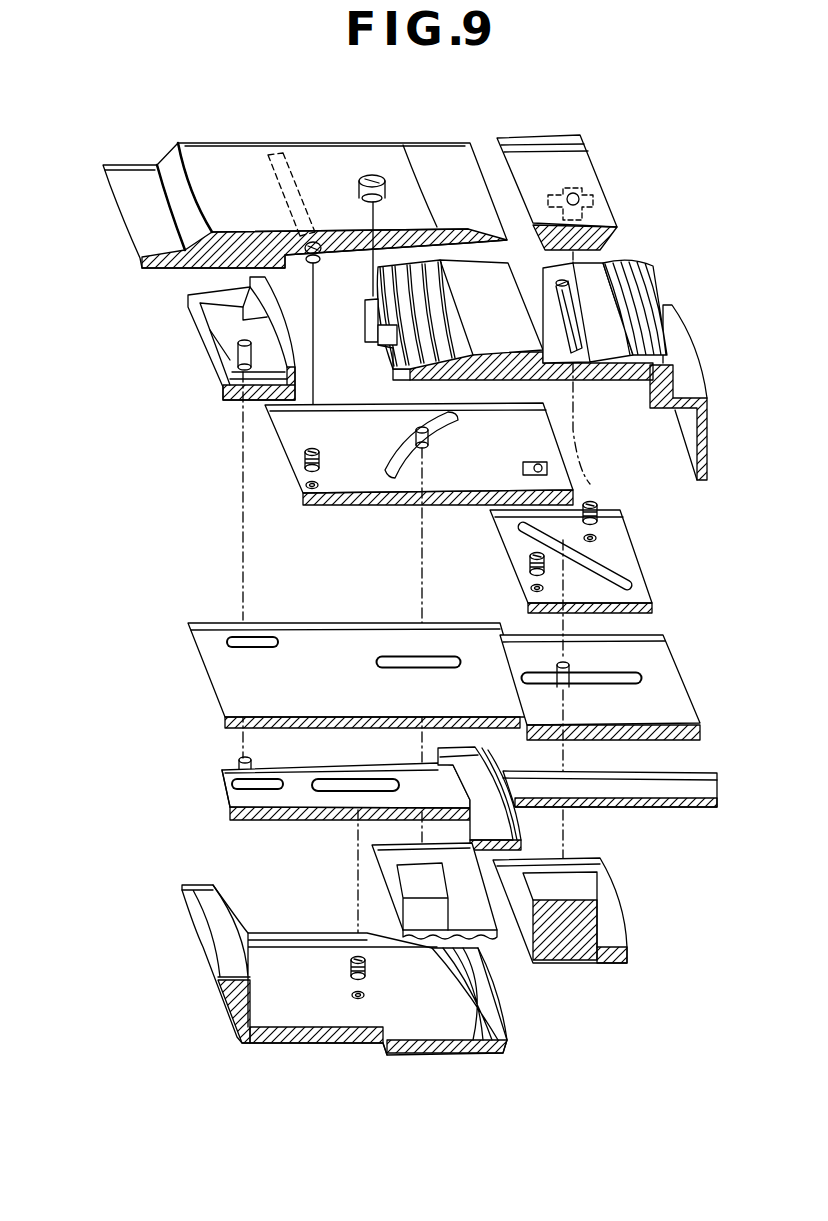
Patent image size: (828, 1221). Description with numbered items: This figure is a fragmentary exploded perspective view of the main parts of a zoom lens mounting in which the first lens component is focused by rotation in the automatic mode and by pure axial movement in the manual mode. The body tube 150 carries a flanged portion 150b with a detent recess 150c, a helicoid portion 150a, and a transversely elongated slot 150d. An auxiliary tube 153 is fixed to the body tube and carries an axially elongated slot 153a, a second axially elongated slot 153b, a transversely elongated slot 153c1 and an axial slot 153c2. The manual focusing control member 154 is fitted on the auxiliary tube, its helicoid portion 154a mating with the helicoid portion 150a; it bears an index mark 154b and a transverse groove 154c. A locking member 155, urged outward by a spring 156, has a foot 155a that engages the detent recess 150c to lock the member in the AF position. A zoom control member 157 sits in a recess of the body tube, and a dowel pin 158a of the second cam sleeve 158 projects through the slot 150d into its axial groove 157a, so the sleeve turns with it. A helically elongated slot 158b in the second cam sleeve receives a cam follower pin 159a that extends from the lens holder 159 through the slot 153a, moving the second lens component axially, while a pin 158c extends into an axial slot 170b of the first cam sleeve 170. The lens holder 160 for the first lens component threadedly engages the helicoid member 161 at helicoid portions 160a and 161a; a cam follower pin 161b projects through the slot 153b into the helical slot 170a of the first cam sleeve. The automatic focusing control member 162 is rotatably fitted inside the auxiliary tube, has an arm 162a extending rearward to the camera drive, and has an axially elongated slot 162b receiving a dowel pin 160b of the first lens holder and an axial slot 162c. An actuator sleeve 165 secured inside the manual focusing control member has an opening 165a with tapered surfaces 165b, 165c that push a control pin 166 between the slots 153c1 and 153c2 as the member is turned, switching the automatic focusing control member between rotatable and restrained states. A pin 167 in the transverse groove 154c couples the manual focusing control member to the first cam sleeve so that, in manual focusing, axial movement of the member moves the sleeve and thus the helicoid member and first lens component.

The body tube 150 is at (680, 356).
The helicoid portion 150a is at (440, 333).
The flanged portion 150b is at (366, 301).
The detent recess 150c is at (395, 365).
The transversely elongated slot 150d is at (585, 366).
The auxiliary tube 153 is at (680, 714).
The axially elongated slot 153a is at (643, 679).
The second axially elongated slot 153b is at (392, 656).
The transversely elongated slot 153c1 is at (265, 699).
The axial slot 153c2 is at (268, 636).
The manual focusing control member 154 is at (228, 160).
The helicoid portion 154a is at (454, 264).
The index mark 154b is at (484, 176).
The transverse groove 154c is at (288, 150).
The locking member 155 is at (373, 174).
The foot 155a is at (380, 338).
The spring 156 is at (319, 242).
The zoom control member 157 is at (548, 157).
The axial groove 157a is at (598, 201).
The second cam sleeve 158 is at (625, 552).
The dowel pin 158a is at (599, 508).
The helically elongated slot 158b is at (634, 587).
The pin 158c is at (530, 564).
The lens holder 159 is at (613, 929).
The cam follower pin 159a is at (563, 552).
The lens holder 160 is at (358, 1015).
The helicoid portion 160a is at (485, 1027).
The dowel pin 160b is at (352, 978).
The helicoid member 161 is at (494, 923).
The helicoid portion 161a is at (485, 965).
The cam follower pin 161b is at (428, 437).
The automatic focusing control member 162 is at (298, 797).
The arm 162a is at (687, 791).
The axially elongated slot 162b is at (337, 793).
The axial slot 162c is at (272, 792).
The actuator sleeve 165 is at (222, 380).
The opening 165a is at (226, 350).
The tapered surface 165b is at (232, 370).
The tapered surface 165c is at (232, 308).
The control pin 166 is at (245, 350).
The pin 167 is at (305, 473).
The first cam sleeve 170 is at (357, 475).
The helical slot 170a is at (397, 480).
The axial slot 170b is at (565, 467).